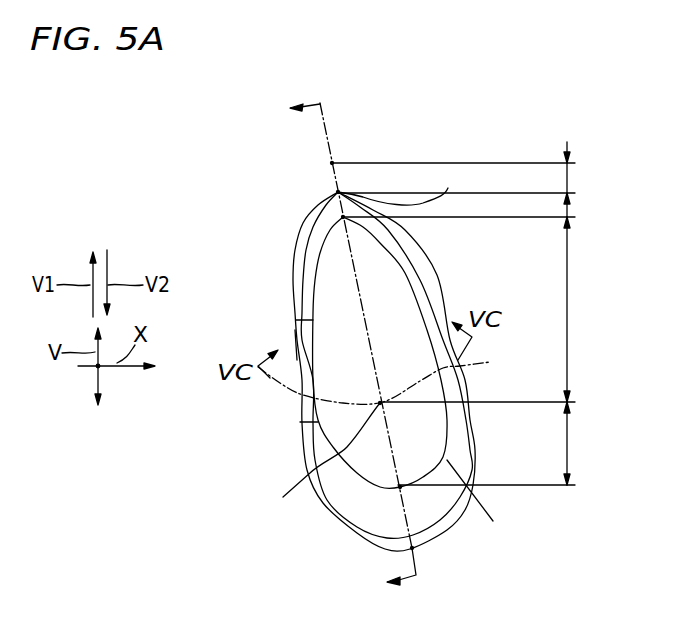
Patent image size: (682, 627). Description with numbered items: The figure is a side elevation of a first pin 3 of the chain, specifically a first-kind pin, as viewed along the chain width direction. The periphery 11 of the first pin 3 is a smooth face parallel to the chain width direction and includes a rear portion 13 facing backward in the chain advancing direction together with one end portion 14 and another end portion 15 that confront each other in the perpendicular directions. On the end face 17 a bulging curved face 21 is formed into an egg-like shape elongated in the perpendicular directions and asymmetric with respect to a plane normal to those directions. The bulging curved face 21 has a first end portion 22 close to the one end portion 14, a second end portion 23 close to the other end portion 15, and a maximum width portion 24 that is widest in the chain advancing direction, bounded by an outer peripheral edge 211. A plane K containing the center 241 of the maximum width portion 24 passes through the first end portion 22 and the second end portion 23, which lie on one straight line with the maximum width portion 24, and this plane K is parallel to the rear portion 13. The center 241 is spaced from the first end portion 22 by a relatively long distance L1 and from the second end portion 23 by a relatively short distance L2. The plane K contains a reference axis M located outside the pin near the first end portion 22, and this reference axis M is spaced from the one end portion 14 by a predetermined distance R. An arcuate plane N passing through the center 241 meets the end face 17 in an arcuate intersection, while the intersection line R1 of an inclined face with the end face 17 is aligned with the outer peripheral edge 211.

The first pin 3 is at (245, 182).
The periphery 11 is at (475, 455).
The rear portion 13 is at (298, 357).
The one end portion 14 is at (338, 192).
The other end portion 15 is at (411, 548).
The end face 17 is at (297, 250).
The bulging curved face 21 is at (380, 273).
The outer peripheral edge 211 is at (296, 320).
The first end portion 22 is at (429, 187).
The second end portion 23 is at (400, 487).
The maximum width portion 24 is at (300, 422).
The center of the maximum width portion 241 is at (277, 457).
The plane K is at (323, 103).
The reference axis M is at (332, 163).
The arcuate plane N is at (416, 382).
The distance between reference axis and one end portion R is at (602, 179).
The intersection line R1 is at (417, 537).
The relatively long distance L1 is at (579, 309).
The relatively short distance L2 is at (578, 443).